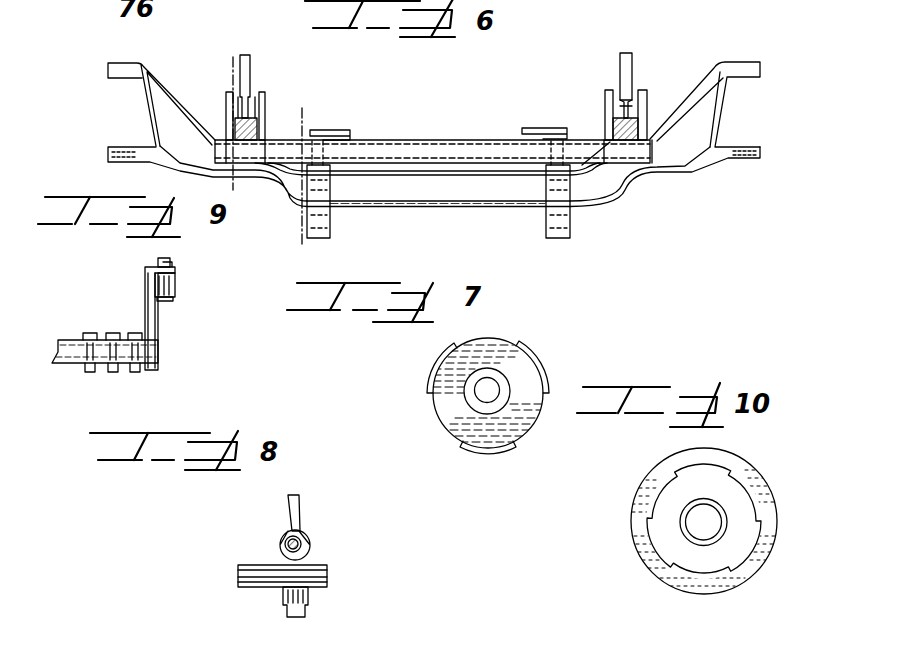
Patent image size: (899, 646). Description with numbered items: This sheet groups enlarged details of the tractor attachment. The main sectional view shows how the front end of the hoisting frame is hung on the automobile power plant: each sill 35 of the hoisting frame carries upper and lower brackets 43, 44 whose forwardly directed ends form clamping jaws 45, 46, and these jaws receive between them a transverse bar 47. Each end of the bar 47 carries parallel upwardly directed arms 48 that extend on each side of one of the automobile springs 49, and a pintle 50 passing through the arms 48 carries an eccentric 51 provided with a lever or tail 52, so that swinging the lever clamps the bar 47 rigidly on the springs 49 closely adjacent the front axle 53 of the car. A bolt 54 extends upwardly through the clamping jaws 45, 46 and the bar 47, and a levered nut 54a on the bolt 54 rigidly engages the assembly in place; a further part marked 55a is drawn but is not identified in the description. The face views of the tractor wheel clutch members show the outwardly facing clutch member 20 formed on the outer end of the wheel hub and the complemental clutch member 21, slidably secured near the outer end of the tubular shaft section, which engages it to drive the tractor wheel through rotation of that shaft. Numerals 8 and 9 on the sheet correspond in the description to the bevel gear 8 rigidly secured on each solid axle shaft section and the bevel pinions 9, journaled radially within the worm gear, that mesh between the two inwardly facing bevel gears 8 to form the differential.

In FIG. 6, the bevel gear 8 is at (232, 81).
In FIG. 6, the bevel pinions 9 is at (314, 224).
In FIG. 10, the clutch member 20 is at (761, 497).
In FIG. 7, the complemental clutch member 21 is at (521, 378).
In FIG. 9, the sills 35 is at (68, 338).
In FIG. 9, the upper bracket 43 is at (145, 301).
In FIG. 9, the lower bracket 44 is at (158, 337).
In FIG. 9, the clamping jaw 45 is at (175, 268).
In FIG. 9, the clamping jaw 46 is at (168, 299).
In FIG. 6, the transverse bar 47 is at (424, 150).
In FIG. 9, the transverse bar 47 is at (176, 282).
In FIG. 8, the transverse bar 47 is at (308, 603).
In FIG. 6, the upwardly directed arms 48 is at (608, 113).
In FIG. 8, the upwardly directed arms 48 is at (285, 535).
In FIG. 6, the springs 49 is at (257, 130).
In FIG. 8, the springs 49 is at (320, 572).
In FIG. 6, the pintle 50 is at (630, 93).
In FIG. 8, the pintle 50 is at (296, 541).
In FIG. 6, the eccentric 51 is at (623, 97).
In FIG. 8, the eccentric 51 is at (308, 550).
In FIG. 6, the lever or tail 52 is at (631, 62).
In FIG. 8, the lever or tail 52 is at (297, 505).
In FIG. 6, the front axle 53 is at (462, 192).
In FIG. 6, the bolt 54 is at (607, 190).
In FIG. 9, the levered nut 54a is at (158, 264).
In FIG. 6, the retaining plate 55a is at (532, 128).